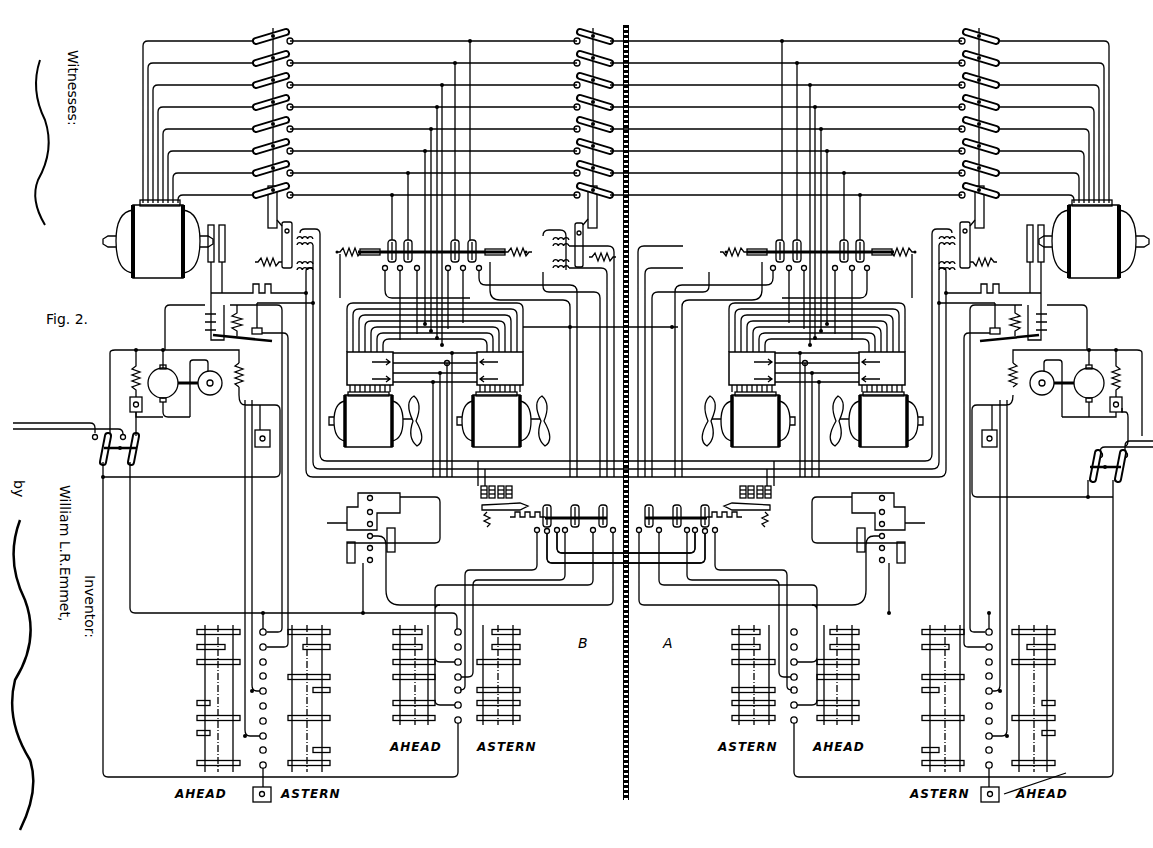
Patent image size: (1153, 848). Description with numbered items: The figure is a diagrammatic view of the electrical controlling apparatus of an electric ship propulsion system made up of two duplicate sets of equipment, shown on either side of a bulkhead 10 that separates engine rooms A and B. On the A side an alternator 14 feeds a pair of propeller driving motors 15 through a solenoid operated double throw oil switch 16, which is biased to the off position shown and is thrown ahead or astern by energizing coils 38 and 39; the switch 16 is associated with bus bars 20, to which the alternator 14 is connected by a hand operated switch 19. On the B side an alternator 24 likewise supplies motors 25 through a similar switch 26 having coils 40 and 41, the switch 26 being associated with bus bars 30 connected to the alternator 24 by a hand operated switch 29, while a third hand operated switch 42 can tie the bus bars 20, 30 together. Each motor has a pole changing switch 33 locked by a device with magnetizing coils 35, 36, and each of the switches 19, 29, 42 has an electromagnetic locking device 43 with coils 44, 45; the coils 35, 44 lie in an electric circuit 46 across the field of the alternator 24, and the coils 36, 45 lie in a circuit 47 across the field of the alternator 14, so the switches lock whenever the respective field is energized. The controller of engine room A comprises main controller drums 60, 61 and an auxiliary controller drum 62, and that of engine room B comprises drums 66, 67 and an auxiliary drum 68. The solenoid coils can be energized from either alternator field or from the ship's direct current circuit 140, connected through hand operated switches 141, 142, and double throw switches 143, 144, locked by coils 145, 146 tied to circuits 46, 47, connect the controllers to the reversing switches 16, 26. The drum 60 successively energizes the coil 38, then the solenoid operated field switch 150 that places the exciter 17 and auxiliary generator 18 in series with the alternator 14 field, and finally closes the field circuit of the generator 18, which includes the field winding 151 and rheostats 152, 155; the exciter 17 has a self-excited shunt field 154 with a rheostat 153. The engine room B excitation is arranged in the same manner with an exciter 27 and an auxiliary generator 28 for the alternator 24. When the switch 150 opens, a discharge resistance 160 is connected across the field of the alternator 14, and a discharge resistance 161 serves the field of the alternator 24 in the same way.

The bulkhead 10 is at (630, 724).
The alternator 14 is at (1074, 159).
The electric motors 15 is at (812, 419).
The double throw oil switch 16 is at (778, 240).
The main exciter 17 is at (1081, 370).
The auxiliary direct current generator 18 is at (1042, 399).
The hand operated switch 19 is at (997, 127).
The bus bars 20 is at (716, 86).
The alternator 24 is at (178, 159).
The electric motors 25 is at (439, 419).
The double throw oil switch 26 is at (391, 240).
The exciter 27 is at (167, 370).
The auxiliary generator 28 is at (212, 399).
The hand operated switch 29 is at (255, 103).
The bus bars 30 is at (371, 62).
The pole changing switch 33 is at (347, 365).
The magnetizing coil 35 is at (627, 361).
The magnetizing coil 36 is at (627, 377).
The energizing coil 38 is at (895, 250).
The energizing coil 39 is at (746, 250).
The energizing coil 40 is at (352, 250).
The energizing coil 41 is at (500, 250).
The hand operated switch 42 is at (574, 98).
The electromagnetic locking device 43 is at (282, 236).
The energizing coil 44 is at (303, 272).
The energizing coil 45 is at (306, 236).
The electric circuit 46 is at (340, 478).
The electric circuit 47 is at (650, 462).
The main controller drum 60 is at (1057, 684).
The main controller drum 61 is at (731, 683).
The auxiliary controller drum 62 is at (905, 533).
The main controller drum 66 is at (205, 692).
The main controller drum 67 is at (520, 678).
The auxiliary controller drum 68 is at (347, 534).
The direct current lighting or power circuit 140 is at (47, 423).
The hand operated switch 141 is at (1088, 466).
The hand operated switch 142 is at (138, 448).
The hand operated double throw switch 143 is at (669, 509).
The hand operated double throw switch 144 is at (598, 499).
The energizing coil 145 is at (513, 492).
The energizing coil 146 is at (480, 491).
The solenoid operated field switch 150 is at (1038, 521).
The field winding 151 is at (1008, 384).
The rheostat 152 is at (998, 440).
The rheostat 153 is at (1120, 412).
The shunt field 154 is at (1119, 384).
The rheostat 155 is at (1049, 779).
The discharge resistance 160 is at (1045, 318).
The discharge resistance 161 is at (205, 319).